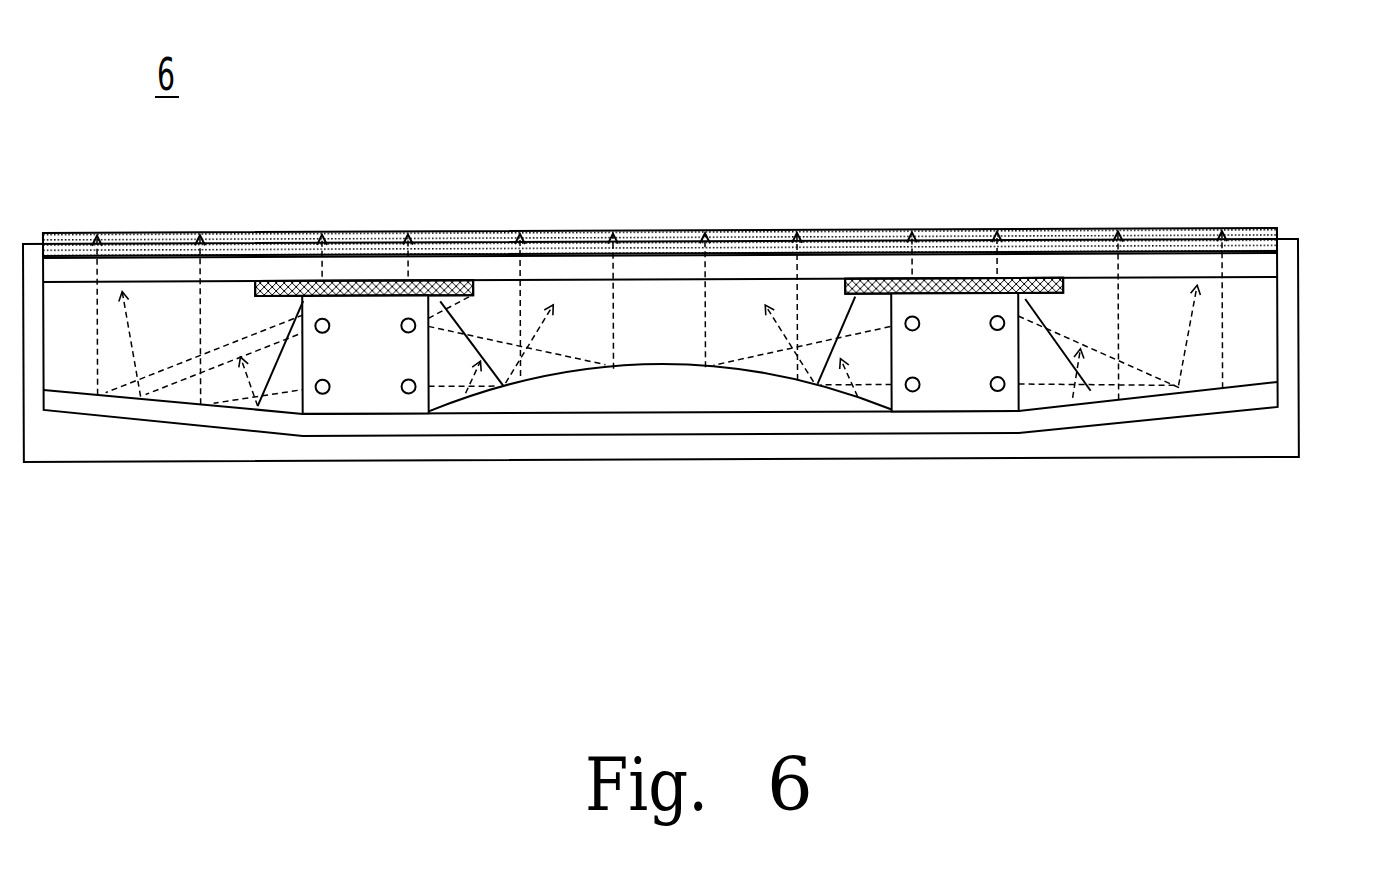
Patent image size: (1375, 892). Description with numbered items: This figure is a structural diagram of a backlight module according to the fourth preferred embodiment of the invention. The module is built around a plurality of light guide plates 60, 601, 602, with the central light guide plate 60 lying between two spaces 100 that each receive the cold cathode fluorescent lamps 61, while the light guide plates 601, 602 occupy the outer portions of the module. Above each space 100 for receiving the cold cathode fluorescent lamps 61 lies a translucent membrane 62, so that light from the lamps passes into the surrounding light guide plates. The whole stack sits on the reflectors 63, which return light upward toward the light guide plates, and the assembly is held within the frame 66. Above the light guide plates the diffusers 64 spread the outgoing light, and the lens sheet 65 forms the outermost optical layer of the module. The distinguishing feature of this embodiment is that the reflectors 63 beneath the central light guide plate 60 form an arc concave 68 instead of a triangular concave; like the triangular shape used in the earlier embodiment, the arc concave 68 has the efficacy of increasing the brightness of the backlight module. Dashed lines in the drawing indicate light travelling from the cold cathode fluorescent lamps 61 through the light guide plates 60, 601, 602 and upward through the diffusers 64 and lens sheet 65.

The light guide plate 60 is at (660, 260).
The light guide plate 601 is at (175, 282).
The light guide plate 602 is at (1137, 269).
The cold cathode fluorescent lamp 61 is at (656, 440).
The translucent membrane 62 is at (659, 206).
The reflector 63 is at (660, 396).
The diffuser 64 is at (660, 191).
The lens sheet 65 is at (704, 206).
The frame 66 is at (661, 401).
The arc concave 68 is at (659, 463).
The space for receiving the cold cathode fluorescent lamps 100 is at (673, 272).